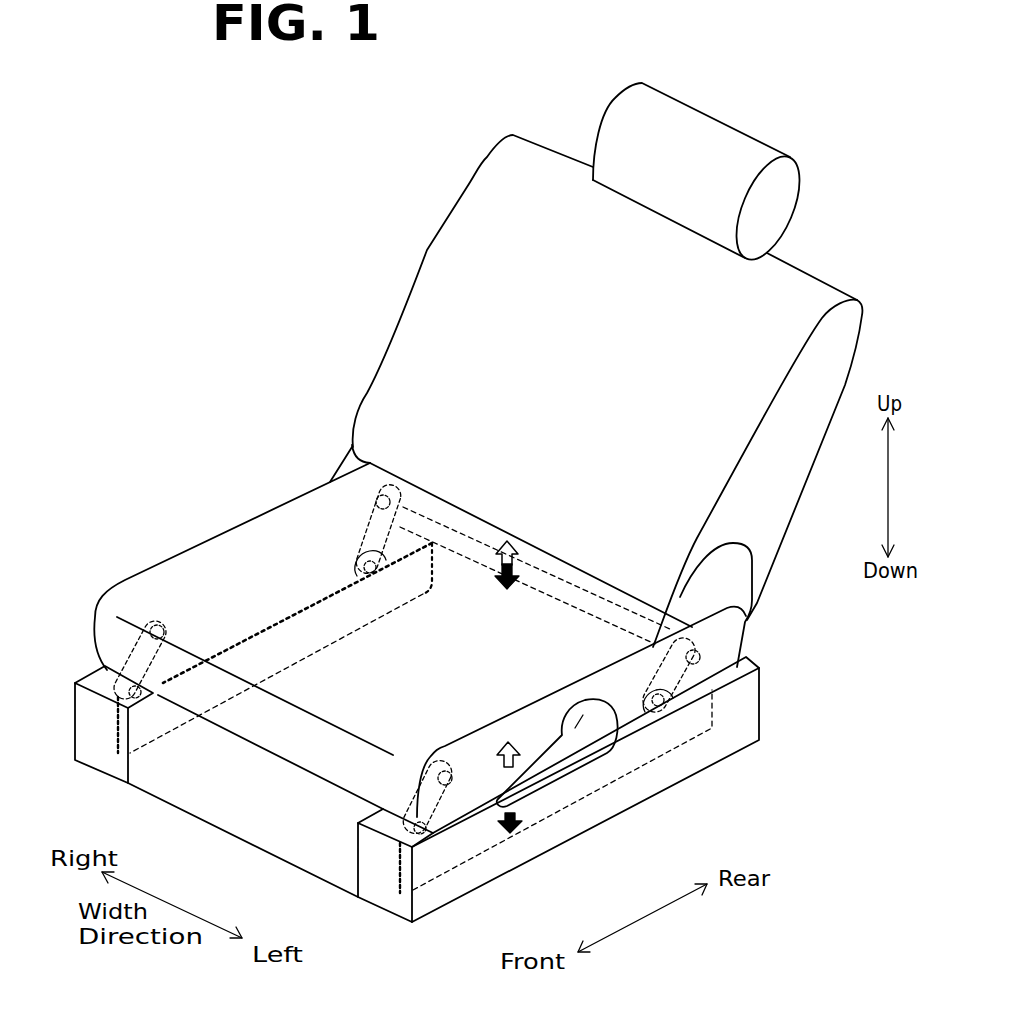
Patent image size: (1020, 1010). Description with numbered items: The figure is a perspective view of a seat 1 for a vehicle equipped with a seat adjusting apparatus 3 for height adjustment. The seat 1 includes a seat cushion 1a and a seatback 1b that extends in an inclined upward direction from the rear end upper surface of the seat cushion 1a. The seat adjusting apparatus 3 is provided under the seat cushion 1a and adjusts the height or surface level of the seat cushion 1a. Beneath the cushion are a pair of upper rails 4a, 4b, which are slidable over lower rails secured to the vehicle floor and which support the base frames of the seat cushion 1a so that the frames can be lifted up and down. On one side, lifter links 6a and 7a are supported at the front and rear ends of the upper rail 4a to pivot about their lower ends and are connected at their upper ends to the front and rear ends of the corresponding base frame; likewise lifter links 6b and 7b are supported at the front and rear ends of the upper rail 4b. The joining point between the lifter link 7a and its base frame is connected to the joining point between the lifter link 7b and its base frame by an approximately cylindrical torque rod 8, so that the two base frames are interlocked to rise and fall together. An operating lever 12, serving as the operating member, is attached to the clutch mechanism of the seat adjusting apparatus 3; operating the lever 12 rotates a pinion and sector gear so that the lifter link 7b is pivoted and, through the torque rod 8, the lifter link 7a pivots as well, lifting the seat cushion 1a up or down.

The seat 1 is at (316, 196).
The seat cushion 1a is at (233, 533).
The seatback 1b is at (468, 184).
The seat adjusting apparatus 3 is at (666, 760).
The upper rail 4a is at (107, 744).
The upper rail 4b is at (398, 884).
The lifter link 6a is at (132, 655).
The lifter link 6b is at (447, 778).
The lifter link 7a is at (363, 535).
The lifter link 7b is at (653, 668).
The torque rod 8 is at (553, 597).
The operating lever 12 is at (580, 760).